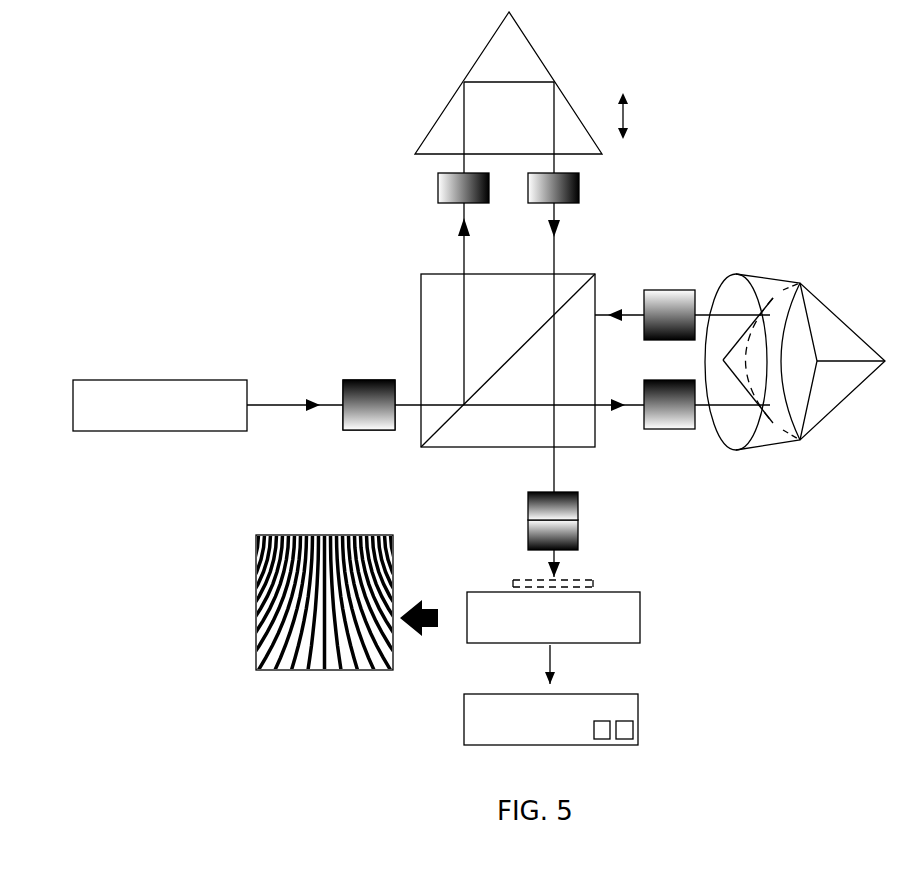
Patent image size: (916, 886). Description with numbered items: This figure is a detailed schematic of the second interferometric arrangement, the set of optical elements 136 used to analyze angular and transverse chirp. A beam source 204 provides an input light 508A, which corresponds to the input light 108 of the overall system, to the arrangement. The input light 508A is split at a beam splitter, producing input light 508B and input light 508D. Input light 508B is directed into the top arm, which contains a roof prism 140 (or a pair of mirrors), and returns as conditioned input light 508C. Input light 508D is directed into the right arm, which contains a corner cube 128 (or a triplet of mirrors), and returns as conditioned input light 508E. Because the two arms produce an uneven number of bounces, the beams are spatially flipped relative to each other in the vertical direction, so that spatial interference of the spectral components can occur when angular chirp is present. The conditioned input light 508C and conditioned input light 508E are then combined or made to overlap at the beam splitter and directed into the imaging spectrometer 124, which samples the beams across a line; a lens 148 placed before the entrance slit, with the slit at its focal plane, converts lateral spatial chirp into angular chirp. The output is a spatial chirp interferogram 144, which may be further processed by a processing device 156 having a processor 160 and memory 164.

The roof prism 140 is at (508, 83).
The set of optical elements 136 is at (679, 84).
The conditioned input light 508C is at (540, 361).
The conditioned input light 508E is at (575, 394).
The input light 508D is at (633, 428).
The input light 508B is at (399, 345).
The input light 508A is at (327, 402).
The input light 108 is at (537, 343).
The beam source 204 is at (130, 392).
The corner cube 128 is at (797, 357).
The lens 148 is at (584, 562).
The imaging spectrometer 124 is at (584, 597).
The processing device 156 is at (581, 716).
The processor 160 is at (659, 751).
The memory 164 is at (648, 760).
The interferogram 144 is at (317, 602).